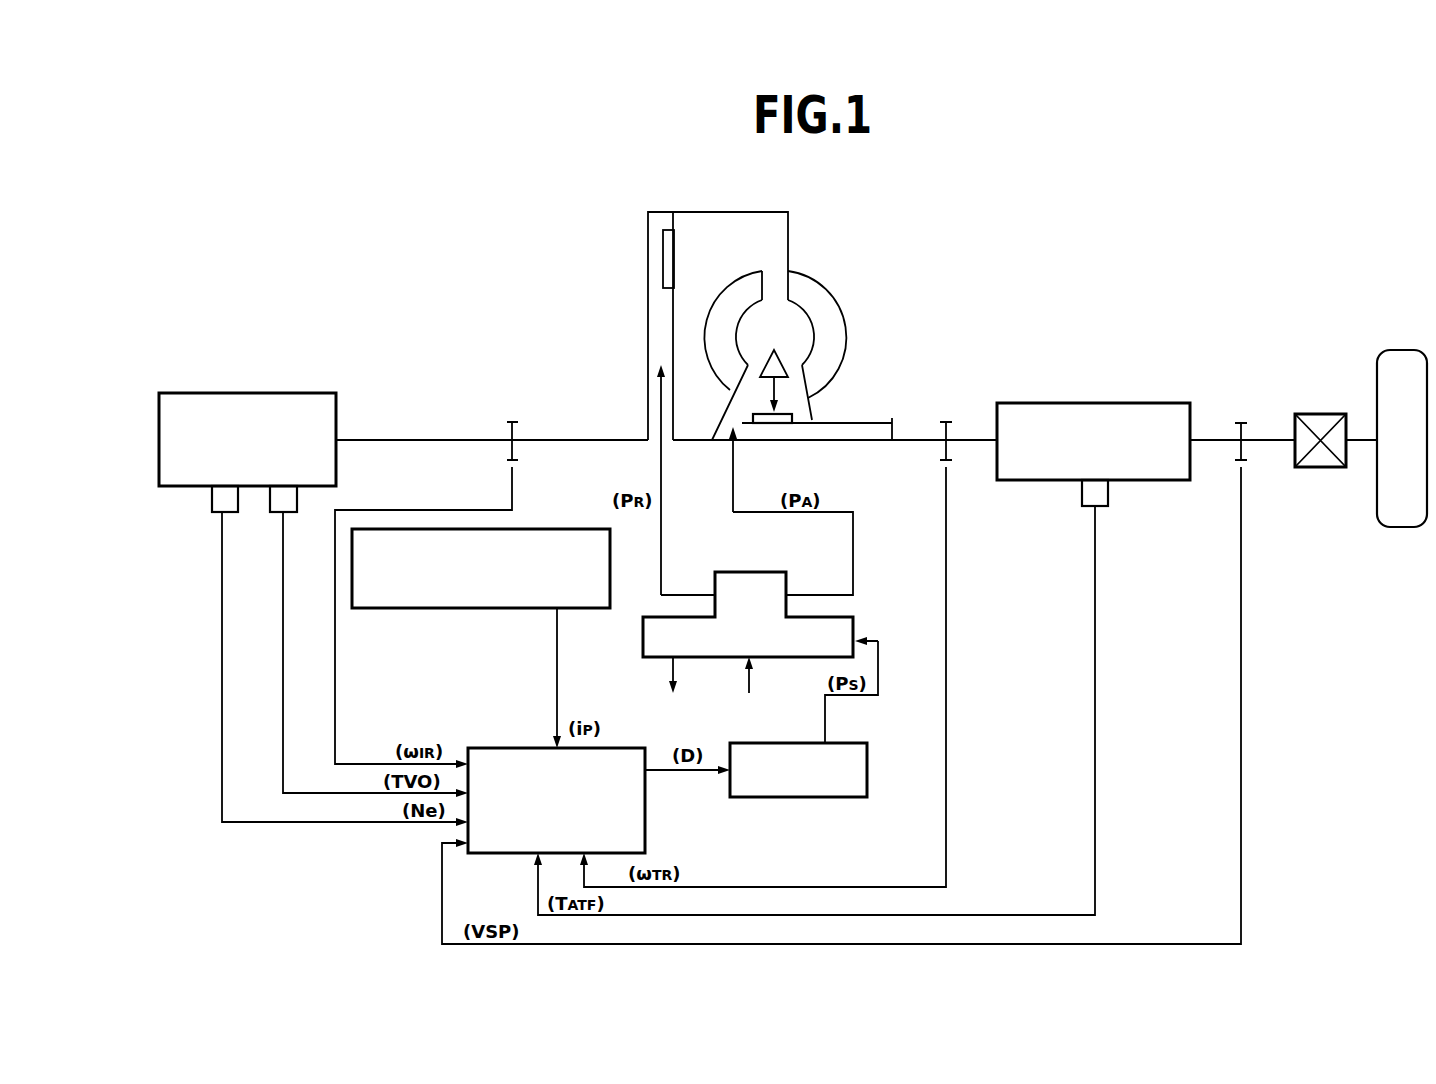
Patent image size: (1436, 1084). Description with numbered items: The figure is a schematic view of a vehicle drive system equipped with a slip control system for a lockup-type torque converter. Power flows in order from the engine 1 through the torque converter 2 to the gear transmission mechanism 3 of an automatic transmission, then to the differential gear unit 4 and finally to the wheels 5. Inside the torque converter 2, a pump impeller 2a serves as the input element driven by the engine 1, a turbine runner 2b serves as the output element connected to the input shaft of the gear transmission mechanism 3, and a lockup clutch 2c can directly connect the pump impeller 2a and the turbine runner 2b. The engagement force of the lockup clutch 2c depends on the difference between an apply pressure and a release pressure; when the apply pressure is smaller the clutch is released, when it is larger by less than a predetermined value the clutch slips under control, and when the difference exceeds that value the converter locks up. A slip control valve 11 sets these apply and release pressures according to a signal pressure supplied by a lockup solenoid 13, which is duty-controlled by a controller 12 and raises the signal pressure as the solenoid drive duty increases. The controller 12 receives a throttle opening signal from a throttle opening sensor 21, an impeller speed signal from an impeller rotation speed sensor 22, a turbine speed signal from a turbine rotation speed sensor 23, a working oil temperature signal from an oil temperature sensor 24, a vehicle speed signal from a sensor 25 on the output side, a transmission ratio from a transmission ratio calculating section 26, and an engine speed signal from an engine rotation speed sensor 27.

The engine 1 is at (292, 393).
The torque converter 2 is at (457, 220).
The pump impeller 2a is at (829, 353).
The turbine runner 2b is at (745, 295).
The lockup clutch 2c is at (670, 230).
The gear transmission mechanism 3 is at (1147, 403).
The differential gear unit 4 is at (1323, 414).
The wheels 5 is at (1400, 350).
The slip control valve 11 is at (856, 623).
The controller 12 is at (482, 748).
The lockup solenoid 13 is at (870, 757).
The throttle opening sensor 21 is at (268, 503).
The impeller rotation speed sensor 22 is at (518, 432).
The turbine rotation speed sensor 23 is at (937, 448).
The oil temperature sensor 24 is at (1110, 492).
The vehicle speed sensor 25 is at (1248, 448).
The transmission ratio calculating section 26 is at (535, 529).
The engine rotation speed sensor 27 is at (210, 503).